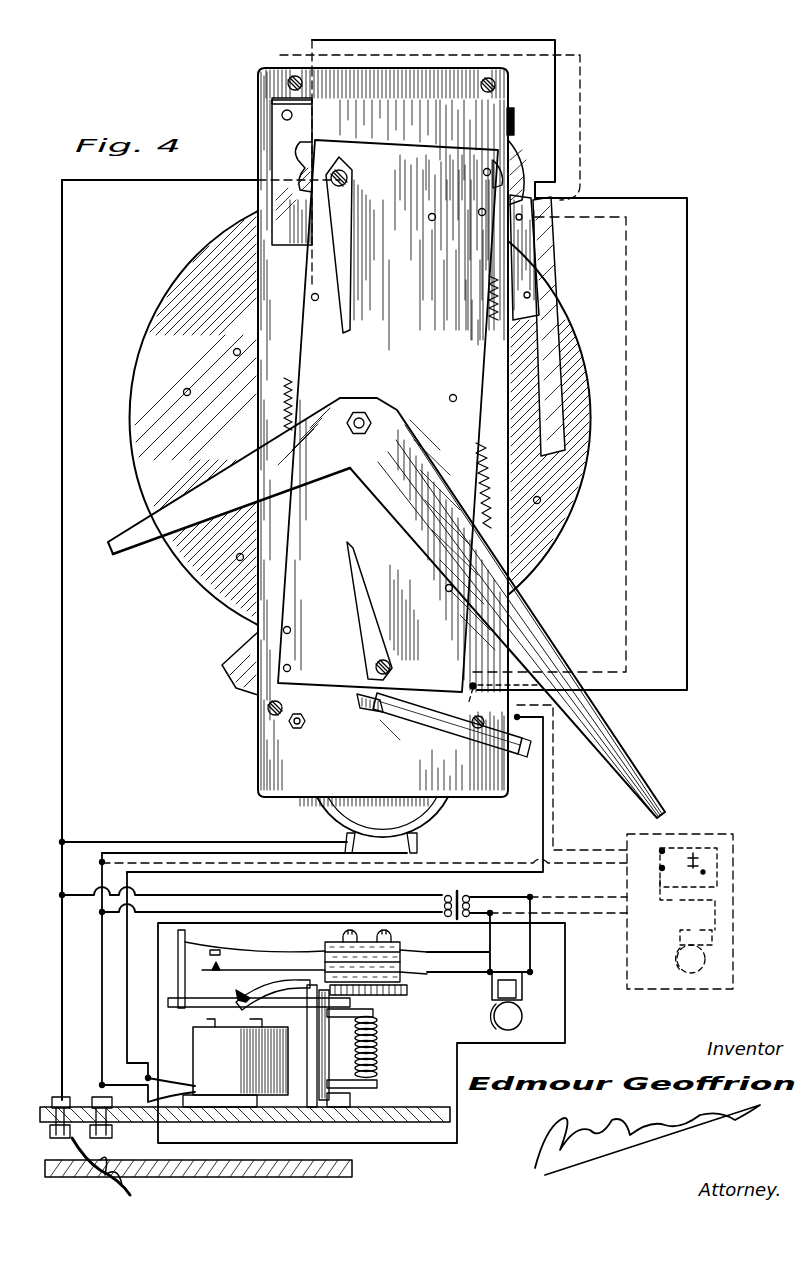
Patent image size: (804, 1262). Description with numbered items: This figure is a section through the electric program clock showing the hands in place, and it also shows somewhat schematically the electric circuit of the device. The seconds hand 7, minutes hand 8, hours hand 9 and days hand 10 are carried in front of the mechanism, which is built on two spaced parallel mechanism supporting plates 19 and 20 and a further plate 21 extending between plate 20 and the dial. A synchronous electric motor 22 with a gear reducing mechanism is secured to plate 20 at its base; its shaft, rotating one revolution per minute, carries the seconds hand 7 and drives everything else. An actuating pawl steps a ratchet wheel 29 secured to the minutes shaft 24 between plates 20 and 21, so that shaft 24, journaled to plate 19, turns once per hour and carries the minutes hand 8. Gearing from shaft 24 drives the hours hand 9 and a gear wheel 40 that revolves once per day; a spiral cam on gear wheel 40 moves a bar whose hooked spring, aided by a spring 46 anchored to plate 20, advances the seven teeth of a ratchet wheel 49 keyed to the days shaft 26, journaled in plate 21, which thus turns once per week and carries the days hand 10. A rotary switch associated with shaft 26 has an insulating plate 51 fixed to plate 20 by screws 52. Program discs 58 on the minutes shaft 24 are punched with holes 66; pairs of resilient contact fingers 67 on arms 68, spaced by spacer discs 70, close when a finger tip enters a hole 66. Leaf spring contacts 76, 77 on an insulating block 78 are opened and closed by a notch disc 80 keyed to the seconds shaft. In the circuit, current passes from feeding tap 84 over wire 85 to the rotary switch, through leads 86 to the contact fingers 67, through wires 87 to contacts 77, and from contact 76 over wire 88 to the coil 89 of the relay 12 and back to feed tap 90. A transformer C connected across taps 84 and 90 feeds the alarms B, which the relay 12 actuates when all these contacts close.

The seconds hand 7 is at (360, 610).
The minutes hand 8 is at (398, 415).
The hours hand 9 is at (130, 550).
The days hand 10 is at (350, 260).
The relay 12 is at (391, 1059).
The mechanism supporting plate 19 is at (512, 130).
The mechanism supporting plate 20 is at (258, 745).
The plate 21 is at (300, 590).
The synchronous electric motor 22 is at (435, 820).
The minutes shaft 24 is at (359, 410).
The days shaft 26 is at (347, 190).
The ratchet wheel 29 is at (288, 385).
The gear wheel 40 is at (490, 540).
The spring 46 is at (490, 300).
The ratchet wheel 49 is at (300, 150).
The insulating plate 51 is at (280, 148).
The screws 52 is at (270, 100).
The program discs 58 is at (138, 385).
The holes 66 is at (191, 394).
The contact fingers 67 is at (548, 310).
The arms 68 is at (528, 250).
The spacer discs 70 is at (520, 165).
The leaf spring contact 76 is at (410, 717).
The leaf spring contact 77 is at (472, 684).
The insulating block 78 is at (523, 752).
The notch disc 80 is at (365, 705).
The feeding tap 84 is at (62, 1097).
The wire 85 is at (62, 640).
The leads 86 is at (312, 50).
The wires 87 is at (628, 425).
The wire 88 is at (555, 780).
The coil 89 is at (200, 1040).
The feed tap 90 is at (96, 1095).
The alarms B is at (523, 1015).
The transformer C is at (466, 891).